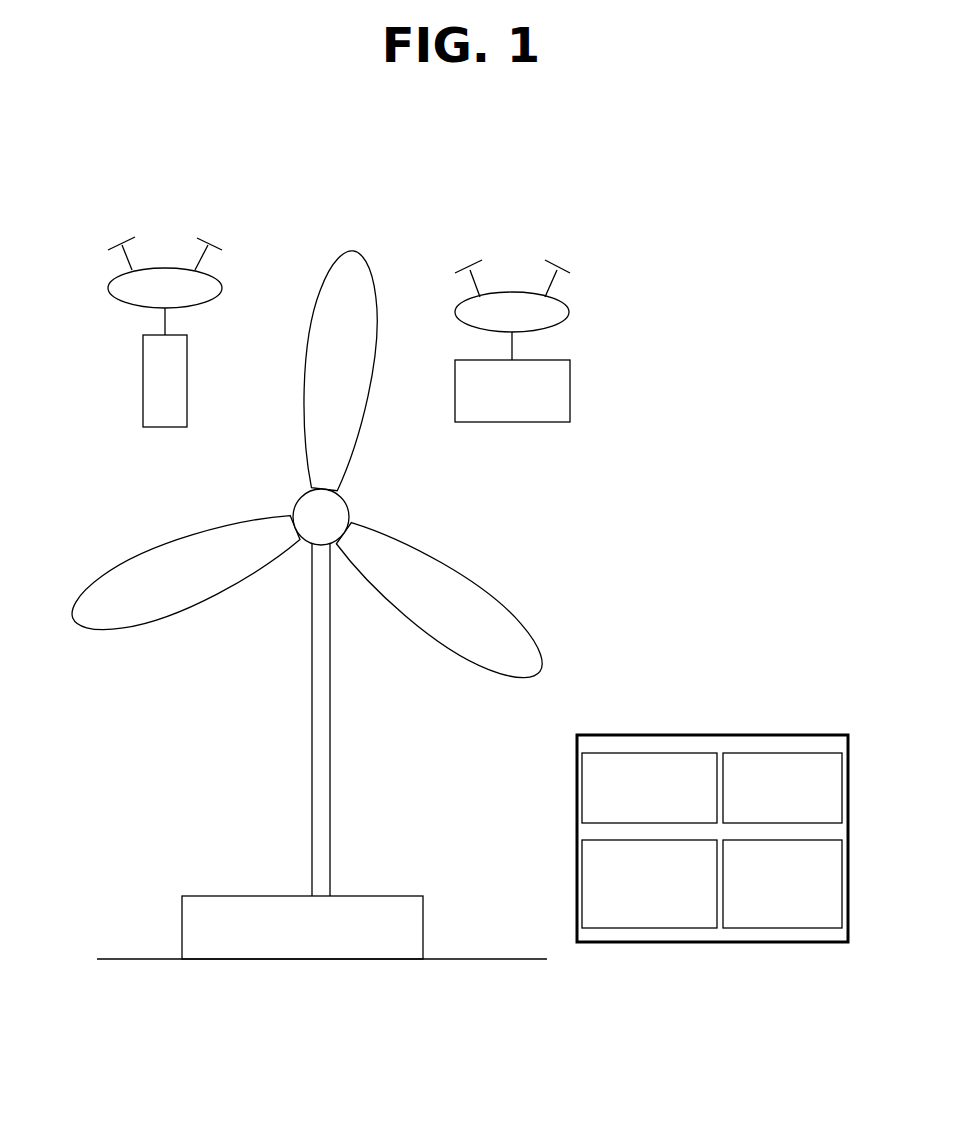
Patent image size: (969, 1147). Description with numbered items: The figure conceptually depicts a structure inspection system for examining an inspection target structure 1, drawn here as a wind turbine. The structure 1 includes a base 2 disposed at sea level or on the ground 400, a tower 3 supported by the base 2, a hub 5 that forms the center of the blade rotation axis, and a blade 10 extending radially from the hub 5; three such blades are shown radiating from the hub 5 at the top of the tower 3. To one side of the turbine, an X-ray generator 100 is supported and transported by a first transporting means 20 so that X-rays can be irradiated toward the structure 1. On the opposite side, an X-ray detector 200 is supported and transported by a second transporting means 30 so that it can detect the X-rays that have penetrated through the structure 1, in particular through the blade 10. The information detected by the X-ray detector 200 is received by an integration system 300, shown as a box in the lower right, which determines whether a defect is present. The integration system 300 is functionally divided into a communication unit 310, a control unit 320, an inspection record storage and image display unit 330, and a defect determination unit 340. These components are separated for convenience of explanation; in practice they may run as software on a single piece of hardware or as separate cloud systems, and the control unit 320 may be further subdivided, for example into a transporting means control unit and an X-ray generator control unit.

The inspection target structure 1 is at (590, 577).
The base 2 is at (400, 905).
The tower 3 is at (323, 798).
The hub 5 is at (313, 512).
The blade 10 is at (350, 422).
The first transporting means 20 is at (520, 303).
The second transporting means 30 is at (172, 280).
The X-ray generator 100 is at (555, 385).
The X-ray detector 200 is at (168, 372).
The integration system 300 is at (747, 735).
The communication unit 310 is at (670, 753).
The control unit 320 is at (808, 753).
The inspection record storage and image display unit 330 is at (653, 927).
The defect determination unit 340 is at (785, 928).
The ground 400 is at (432, 994).